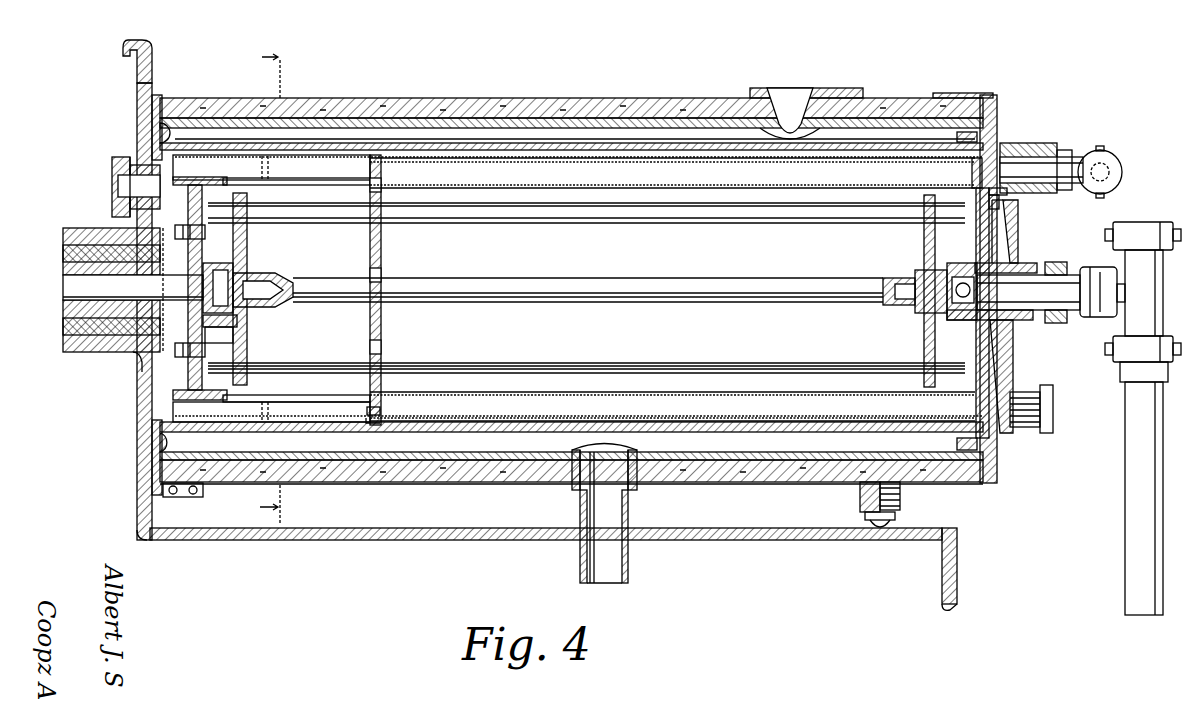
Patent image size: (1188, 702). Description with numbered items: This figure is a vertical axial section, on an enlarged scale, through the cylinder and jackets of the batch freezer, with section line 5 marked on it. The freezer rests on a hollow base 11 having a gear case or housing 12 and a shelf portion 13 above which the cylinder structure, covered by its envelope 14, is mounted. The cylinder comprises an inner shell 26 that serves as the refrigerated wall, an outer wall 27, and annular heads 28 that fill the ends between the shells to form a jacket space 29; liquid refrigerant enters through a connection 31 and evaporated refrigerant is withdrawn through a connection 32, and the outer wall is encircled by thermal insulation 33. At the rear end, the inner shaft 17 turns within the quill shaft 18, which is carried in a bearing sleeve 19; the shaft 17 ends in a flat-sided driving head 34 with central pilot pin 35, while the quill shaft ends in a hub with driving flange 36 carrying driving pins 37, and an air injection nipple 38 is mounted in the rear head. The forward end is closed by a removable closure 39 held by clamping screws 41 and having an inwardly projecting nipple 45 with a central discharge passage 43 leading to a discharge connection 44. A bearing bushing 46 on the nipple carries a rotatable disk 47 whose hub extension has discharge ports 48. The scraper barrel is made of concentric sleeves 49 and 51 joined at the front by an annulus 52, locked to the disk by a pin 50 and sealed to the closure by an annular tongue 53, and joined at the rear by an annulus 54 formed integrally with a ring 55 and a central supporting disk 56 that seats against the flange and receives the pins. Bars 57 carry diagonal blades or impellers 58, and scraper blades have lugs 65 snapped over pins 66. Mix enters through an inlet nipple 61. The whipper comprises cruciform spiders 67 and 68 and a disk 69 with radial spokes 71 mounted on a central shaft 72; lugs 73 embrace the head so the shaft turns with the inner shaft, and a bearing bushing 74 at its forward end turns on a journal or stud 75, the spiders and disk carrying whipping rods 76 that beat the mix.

The section line 5 is at (261, 279).
The pedestal or base 11 is at (389, 548).
The gear case or housing 12 is at (130, 62).
The shelf portion 13 is at (733, 528).
The envelope 14 is at (446, 92).
The inner shaft 17 is at (70, 290).
The quill shaft 18 is at (63, 268).
The bearing sleeve 19 is at (63, 338).
The inner shell 26 is at (528, 143).
The outer wall 27 is at (598, 127).
The annular heads 28 is at (157, 136).
The jacket space 29 is at (656, 132).
The connection 31 is at (622, 570).
The connection 32 is at (790, 95).
The thermal insulation 33 is at (355, 100).
The driving head 34 is at (208, 288).
The pilot pin 35 is at (250, 278).
The driving flange 36 is at (180, 367).
The driving pins 37 is at (205, 232).
The air injection nipple 38 is at (112, 183).
The removable closure 39 is at (1015, 237).
The clamping screws 41 is at (1053, 415).
The discharge passage 43 is at (1051, 292).
The discharge connection 44 is at (1125, 320).
The nipple 45 is at (968, 313).
The bearing bushing 46 is at (1015, 325).
The disk 47 is at (976, 244).
The discharge ports 48 is at (970, 290).
The outer sleeve 49 is at (722, 164).
The pin 50 is at (999, 205).
The inner sleeve 51 is at (812, 191).
The annulus 52 is at (971, 178).
The annular tongue 53 is at (1066, 152).
The annulus 54 is at (381, 172).
The ring 55 is at (271, 288).
The central supporting disk 56 is at (237, 322).
The bars 57 is at (296, 188).
The diagonal blades or impellers 58 is at (277, 162).
The inlet nipple 61 is at (1020, 152).
The lugs 65 is at (364, 419).
The pins 66 is at (368, 408).
The cruciform spider 67 is at (247, 346).
The cruciform spider 68 is at (924, 334).
The disk 69 is at (381, 347).
The radial spokes 71 is at (381, 275).
The central shaft 72 is at (610, 280).
The lugs 73 is at (247, 270).
The bearing bushing 74 is at (920, 272).
The journal or stud 75 is at (895, 280).
The whipping rods 76 is at (523, 220).